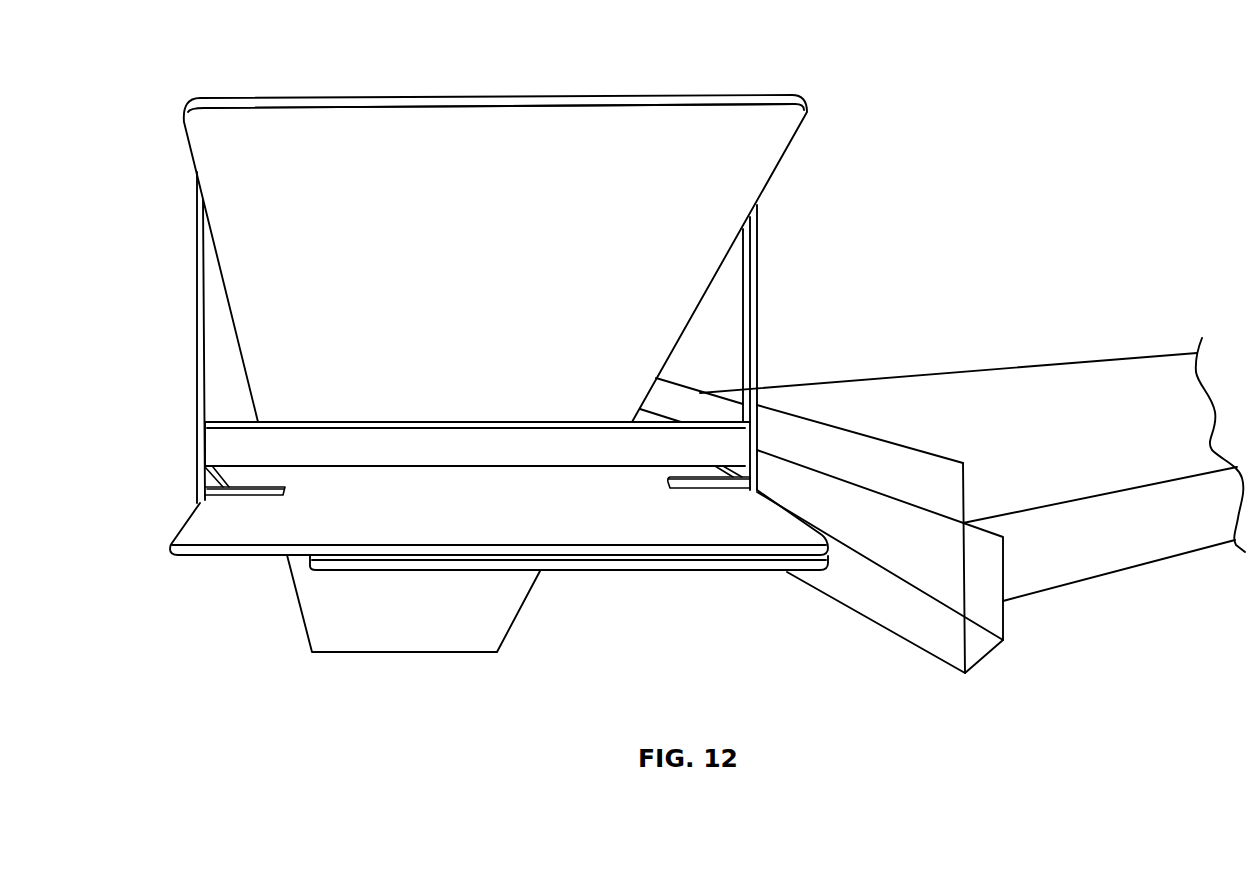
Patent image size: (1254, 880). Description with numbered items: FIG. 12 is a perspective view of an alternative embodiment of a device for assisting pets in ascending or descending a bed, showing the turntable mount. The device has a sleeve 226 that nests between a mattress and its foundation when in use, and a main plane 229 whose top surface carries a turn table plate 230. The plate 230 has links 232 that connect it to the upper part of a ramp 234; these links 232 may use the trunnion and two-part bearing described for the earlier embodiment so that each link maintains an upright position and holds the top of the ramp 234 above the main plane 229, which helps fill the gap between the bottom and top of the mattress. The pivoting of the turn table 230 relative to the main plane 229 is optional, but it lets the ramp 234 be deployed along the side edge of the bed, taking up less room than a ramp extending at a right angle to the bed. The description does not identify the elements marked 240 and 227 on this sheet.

The display housing lid 240 is at (688, 94).
The ramp 234 is at (333, 122).
The links 232 is at (198, 448).
The turn table plate 230 is at (260, 533).
The main plane 229 is at (410, 568).
The sleeve 226 is at (922, 402).
The clamp plate 227 is at (942, 485).